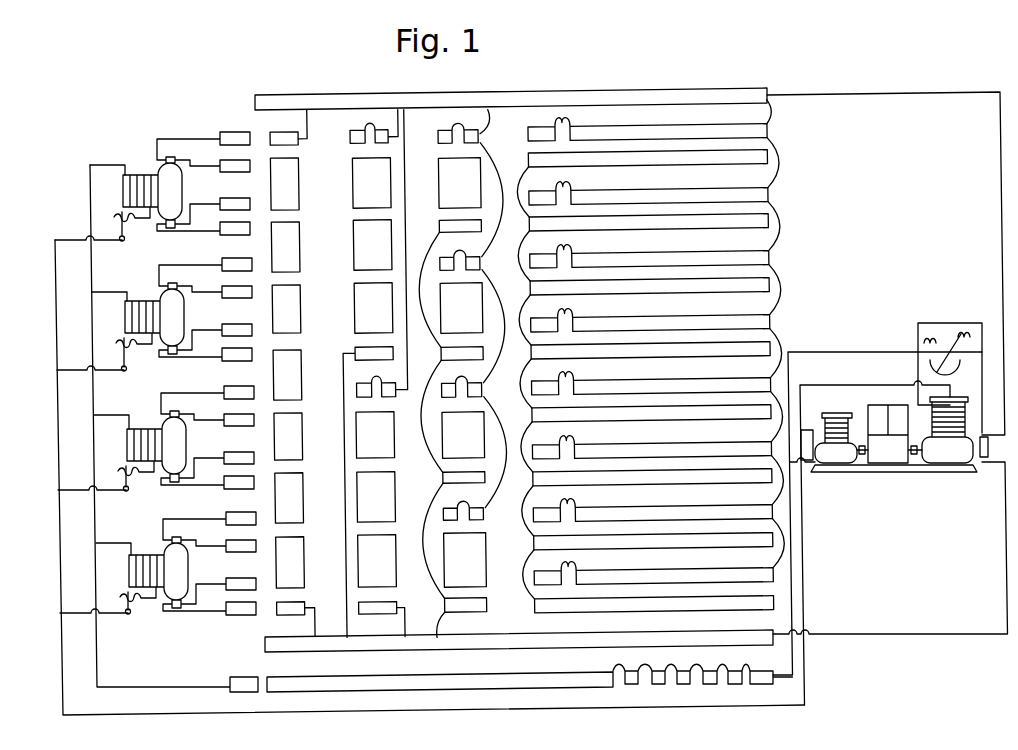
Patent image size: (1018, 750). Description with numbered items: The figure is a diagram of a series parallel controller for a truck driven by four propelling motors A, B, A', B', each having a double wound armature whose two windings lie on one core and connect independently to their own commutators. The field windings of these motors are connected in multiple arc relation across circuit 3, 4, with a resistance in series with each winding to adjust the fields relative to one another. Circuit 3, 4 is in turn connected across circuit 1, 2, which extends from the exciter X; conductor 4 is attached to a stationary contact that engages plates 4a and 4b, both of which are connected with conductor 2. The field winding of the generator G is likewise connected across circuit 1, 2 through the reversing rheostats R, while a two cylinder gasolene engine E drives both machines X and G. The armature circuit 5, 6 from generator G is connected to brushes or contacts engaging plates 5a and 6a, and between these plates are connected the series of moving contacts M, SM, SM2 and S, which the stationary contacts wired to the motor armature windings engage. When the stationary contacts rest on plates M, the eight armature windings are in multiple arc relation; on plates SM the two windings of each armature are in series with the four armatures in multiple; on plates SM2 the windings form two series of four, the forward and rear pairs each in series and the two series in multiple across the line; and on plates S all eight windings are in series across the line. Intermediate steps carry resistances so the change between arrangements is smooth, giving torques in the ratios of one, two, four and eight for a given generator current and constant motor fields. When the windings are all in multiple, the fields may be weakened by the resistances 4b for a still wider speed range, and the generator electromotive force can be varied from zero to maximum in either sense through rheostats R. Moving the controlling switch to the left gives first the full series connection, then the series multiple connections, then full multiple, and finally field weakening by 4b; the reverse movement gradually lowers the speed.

The circuit conductor 1 is at (875, 543).
The circuit conductor 2 is at (877, 513).
The field circuit conductor 3 is at (430, 480).
The field circuit conductor 4 is at (351, 428).
The contact plate 4a is at (519, 653).
The field resistance plates 4b is at (703, 666).
The armature circuit conductor 5 is at (886, 263).
The contact plate 5a is at (511, 88).
The armature circuit conductor 6 is at (890, 548).
The contact plate 6a is at (658, 616).
The propelling motor A is at (156, 438).
The propelling motor A' is at (152, 186).
The propelling motor B is at (158, 563).
The propelling motor B' is at (154, 314).
The series contact plates S is at (292, 373).
The series-multiple contact plates SM is at (463, 373).
The series-multiple contact plates SM2 is at (375, 374).
The multiple contact plates M is at (650, 350).
The reversing rheostats R is at (950, 366).
The exciter X is at (889, 455).
The gasolene engine E is at (895, 451).
The generator G is at (955, 447).